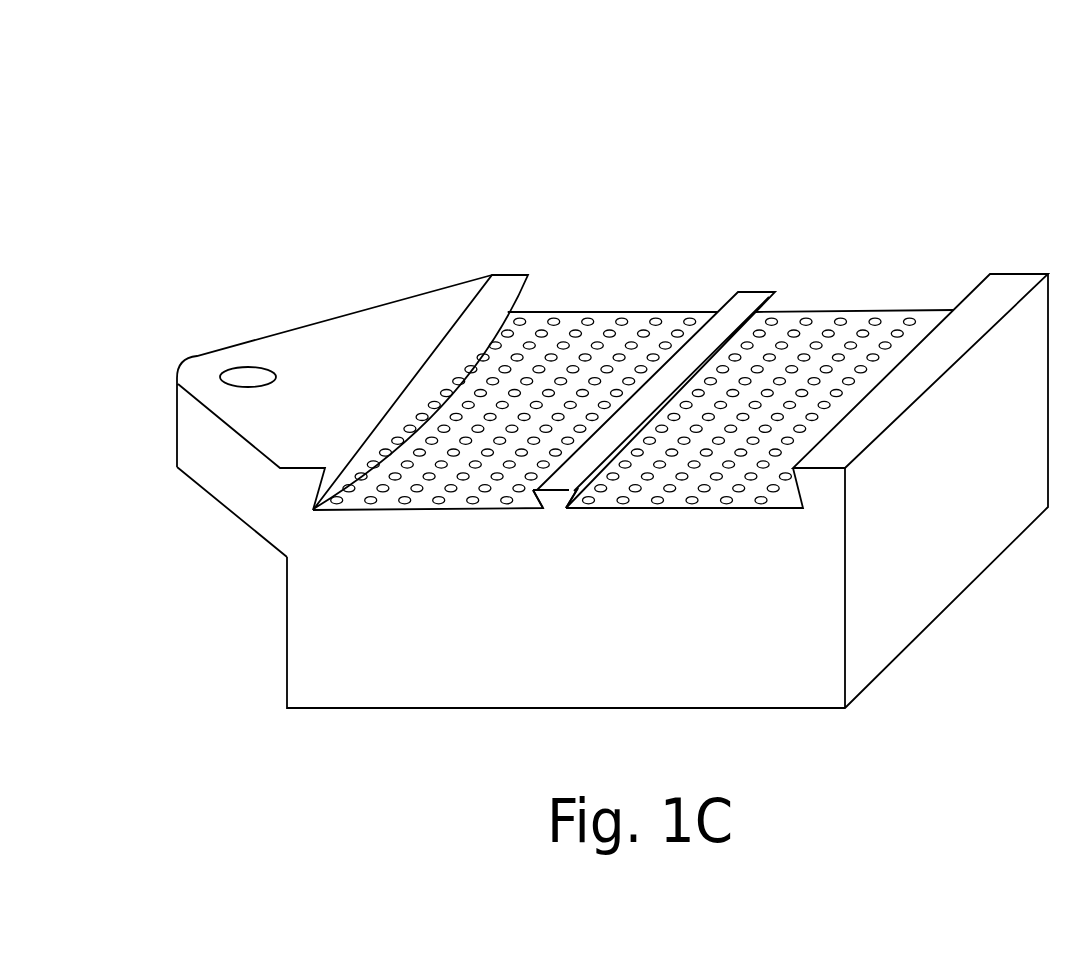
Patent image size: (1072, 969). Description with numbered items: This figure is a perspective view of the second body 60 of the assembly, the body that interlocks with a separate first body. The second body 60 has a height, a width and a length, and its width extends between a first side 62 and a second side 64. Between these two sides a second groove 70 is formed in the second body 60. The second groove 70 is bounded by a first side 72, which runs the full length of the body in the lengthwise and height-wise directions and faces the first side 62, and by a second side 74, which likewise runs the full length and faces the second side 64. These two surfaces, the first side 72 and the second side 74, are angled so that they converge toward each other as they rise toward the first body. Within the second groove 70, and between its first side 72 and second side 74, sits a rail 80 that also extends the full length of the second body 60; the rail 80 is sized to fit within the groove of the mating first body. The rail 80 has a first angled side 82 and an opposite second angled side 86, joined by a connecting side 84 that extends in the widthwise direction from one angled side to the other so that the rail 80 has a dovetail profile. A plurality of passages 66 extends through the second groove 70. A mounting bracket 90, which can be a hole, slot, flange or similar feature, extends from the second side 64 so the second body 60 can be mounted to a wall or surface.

The second body 60 is at (601, 373).
The first side 62 is at (968, 474).
The second side 64 is at (280, 607).
The second plurality of passages 66 is at (622, 319).
The second groove 70 is at (422, 513).
The first side of second groove 72 is at (502, 308).
The second side of second groove 74 is at (967, 295).
The rail 80 is at (753, 293).
The first angled side 82 is at (533, 491).
The connecting side 84 is at (566, 477).
The second angled side 86 is at (578, 493).
The mounting bracket 90 is at (248, 366).